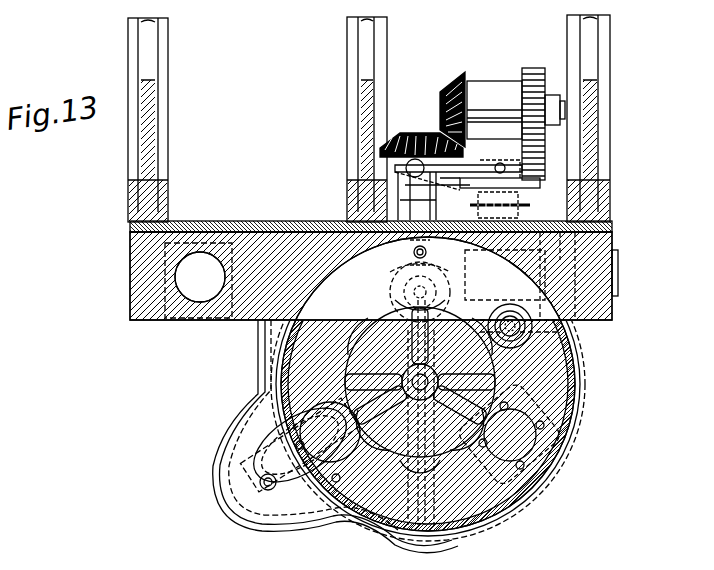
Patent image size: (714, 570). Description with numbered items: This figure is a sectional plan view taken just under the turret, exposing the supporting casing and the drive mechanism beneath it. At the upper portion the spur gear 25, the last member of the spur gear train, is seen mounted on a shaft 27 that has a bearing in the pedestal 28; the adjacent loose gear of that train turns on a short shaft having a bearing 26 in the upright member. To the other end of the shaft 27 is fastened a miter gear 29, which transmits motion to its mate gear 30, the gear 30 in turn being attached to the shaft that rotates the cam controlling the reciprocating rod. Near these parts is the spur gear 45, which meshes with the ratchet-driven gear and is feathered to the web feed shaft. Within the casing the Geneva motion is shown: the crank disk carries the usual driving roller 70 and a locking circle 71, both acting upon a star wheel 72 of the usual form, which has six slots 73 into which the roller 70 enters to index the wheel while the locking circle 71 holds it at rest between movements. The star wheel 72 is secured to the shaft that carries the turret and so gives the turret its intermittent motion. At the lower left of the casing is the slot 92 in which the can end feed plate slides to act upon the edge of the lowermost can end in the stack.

The spur gear 25 is at (532, 67).
The bearing 26 is at (577, 178).
The shaft 27 is at (522, 162).
The pedestal 28 is at (494, 86).
The miter gear 29 is at (449, 78).
The mate gear 30 is at (401, 134).
The spur gear 45 is at (472, 207).
The driving roller 70 is at (431, 257).
The locking circle 71 is at (375, 292).
The star wheel 72 is at (488, 440).
The slots 73 is at (357, 372).
The slot 92 is at (266, 492).